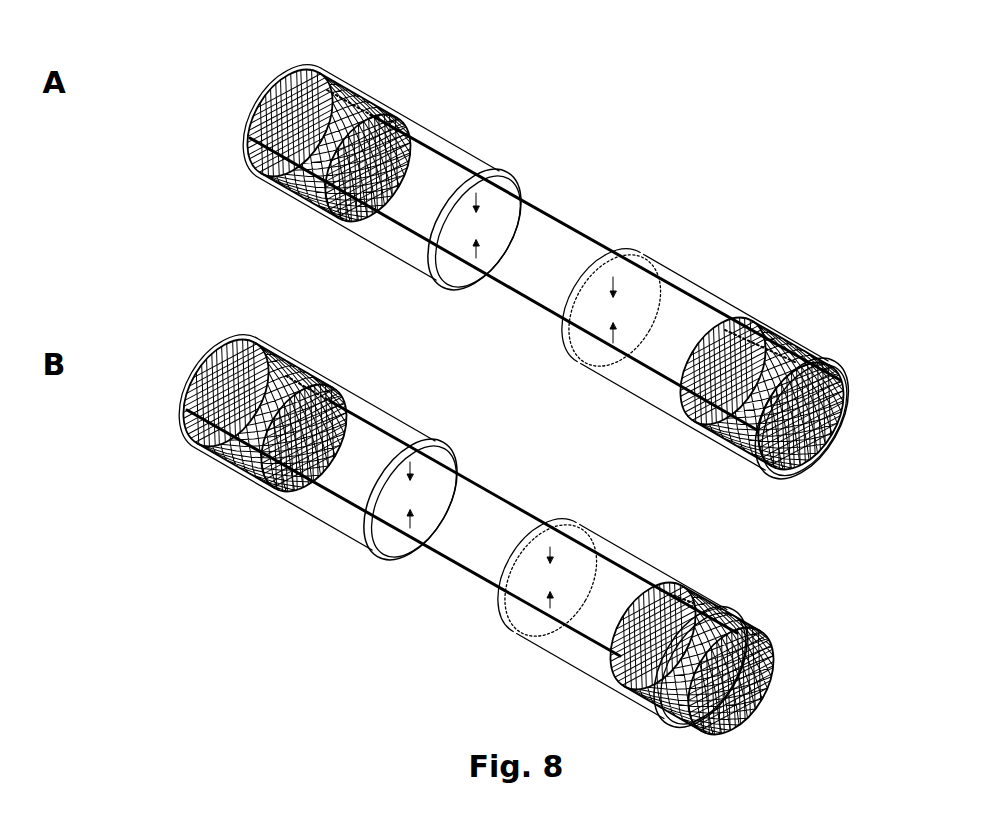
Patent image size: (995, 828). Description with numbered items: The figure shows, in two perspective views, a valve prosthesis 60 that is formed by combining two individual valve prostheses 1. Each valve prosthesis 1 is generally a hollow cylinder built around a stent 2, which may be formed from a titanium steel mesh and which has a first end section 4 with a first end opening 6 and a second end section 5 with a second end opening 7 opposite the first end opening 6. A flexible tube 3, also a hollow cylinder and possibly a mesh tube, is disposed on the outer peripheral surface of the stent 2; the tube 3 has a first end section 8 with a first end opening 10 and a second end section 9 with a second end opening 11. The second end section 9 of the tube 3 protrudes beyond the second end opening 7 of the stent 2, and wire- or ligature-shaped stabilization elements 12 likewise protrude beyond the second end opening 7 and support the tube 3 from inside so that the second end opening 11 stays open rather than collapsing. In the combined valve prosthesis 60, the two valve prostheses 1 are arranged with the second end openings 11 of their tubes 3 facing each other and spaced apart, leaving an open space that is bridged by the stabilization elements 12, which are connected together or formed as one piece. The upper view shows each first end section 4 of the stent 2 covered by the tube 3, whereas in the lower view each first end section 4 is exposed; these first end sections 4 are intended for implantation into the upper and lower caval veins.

The valve prosthesis 1 is at (383, 72).
The stent 2 is at (451, 355).
The flexible tube 3 is at (390, 207).
The first end section 4 is at (267, 140).
The second end section 5 is at (313, 183).
The first end opening 6 is at (267, 103).
The second end opening 7 is at (373, 140).
The first end section 8 is at (323, 78).
The second end section 9 is at (447, 157).
The first end opening 10 is at (262, 117).
The second end opening 11 is at (437, 263).
The wire- or ligature-shaped stabilization element 12 is at (558, 233).
The valve prosthesis 60 is at (620, 150).